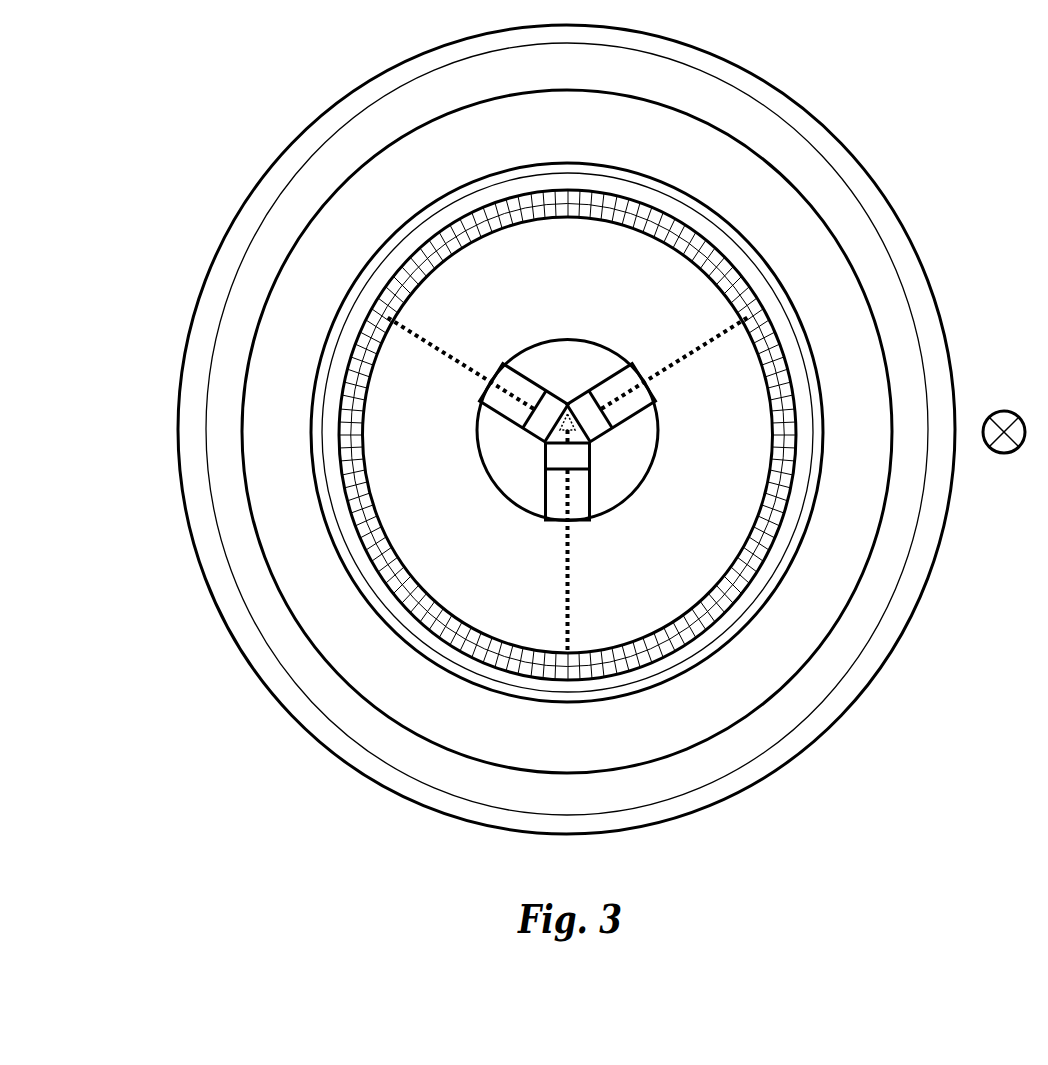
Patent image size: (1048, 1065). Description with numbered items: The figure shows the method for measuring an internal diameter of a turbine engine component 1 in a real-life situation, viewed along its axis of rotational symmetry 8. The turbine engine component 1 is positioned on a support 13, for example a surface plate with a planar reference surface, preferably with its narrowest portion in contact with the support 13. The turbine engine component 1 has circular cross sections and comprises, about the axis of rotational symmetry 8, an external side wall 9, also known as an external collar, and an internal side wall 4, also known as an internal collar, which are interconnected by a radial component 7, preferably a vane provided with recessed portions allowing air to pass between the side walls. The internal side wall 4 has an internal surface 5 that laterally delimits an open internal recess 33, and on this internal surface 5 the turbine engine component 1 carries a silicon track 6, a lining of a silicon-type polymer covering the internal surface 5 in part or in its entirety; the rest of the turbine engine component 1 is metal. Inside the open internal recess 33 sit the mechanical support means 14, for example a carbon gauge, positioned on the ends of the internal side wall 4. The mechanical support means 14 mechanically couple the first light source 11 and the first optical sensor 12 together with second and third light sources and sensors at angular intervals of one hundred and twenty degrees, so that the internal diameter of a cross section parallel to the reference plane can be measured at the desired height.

The turbine engine component 1 is at (178, 465).
The external side wall 9 is at (567, 429).
The radial component 7 is at (567, 431).
The internal side wall 4 is at (417, 643).
The internal surface 5 is at (377, 578).
The silicon track 6 is at (357, 502).
The axis of rotational symmetry 8 is at (567, 407).
The first light source 11 is at (500, 398).
The first optical sensor 12 is at (538, 418).
The mechanical support means 14 is at (567, 430).
The open internal recess 33 is at (698, 560).
The support 13 is at (222, 767).